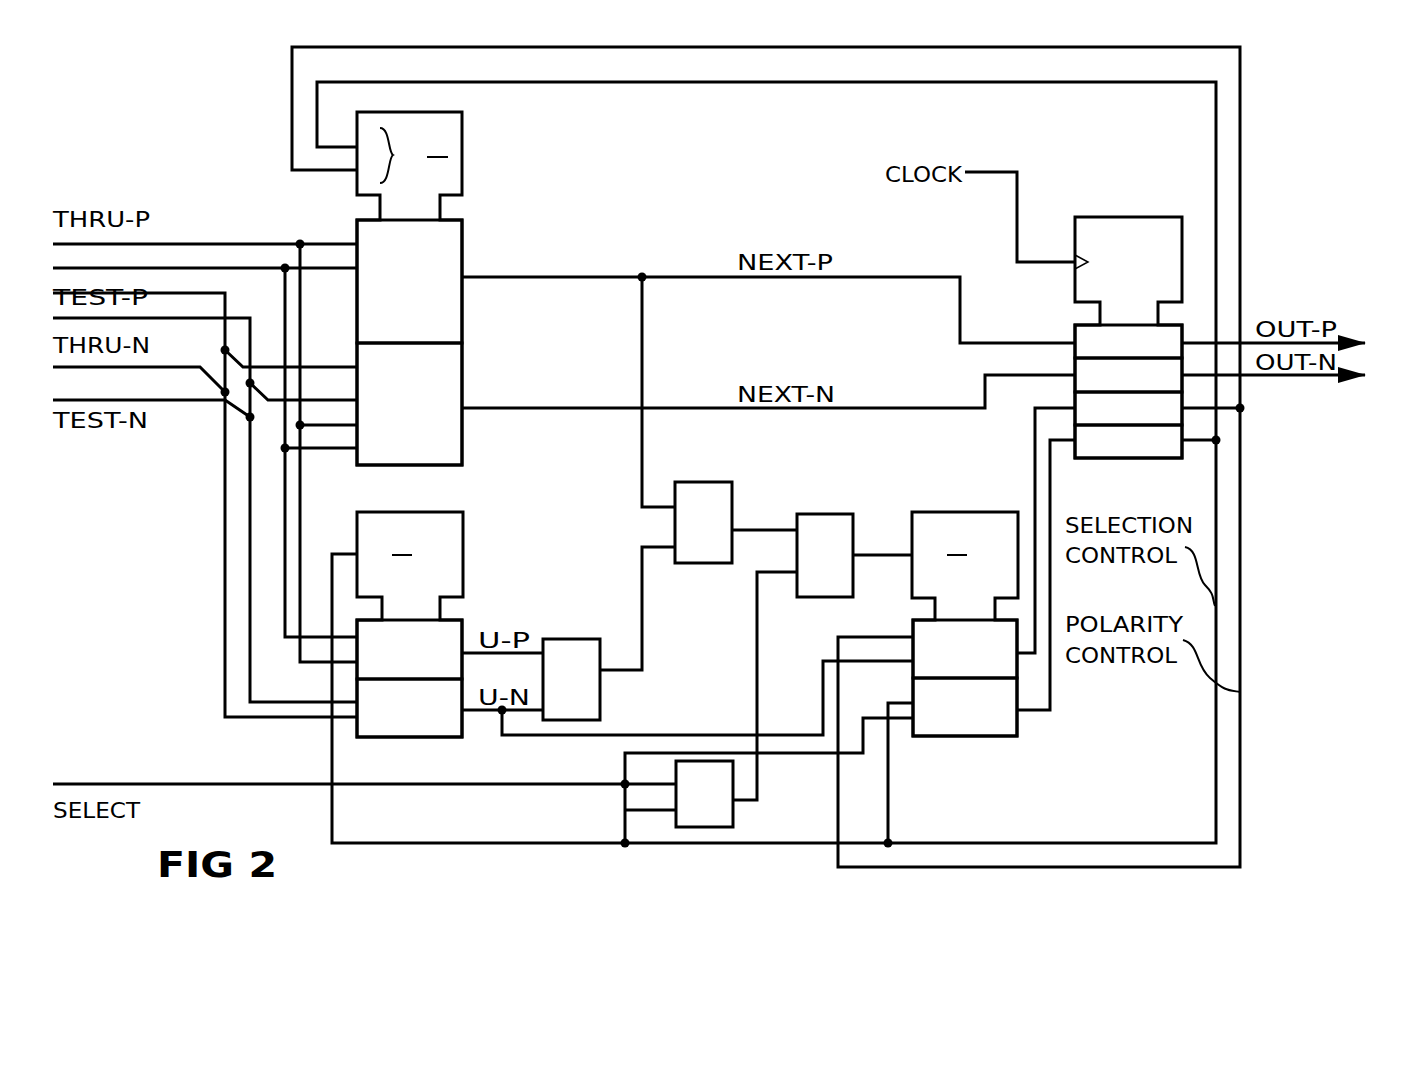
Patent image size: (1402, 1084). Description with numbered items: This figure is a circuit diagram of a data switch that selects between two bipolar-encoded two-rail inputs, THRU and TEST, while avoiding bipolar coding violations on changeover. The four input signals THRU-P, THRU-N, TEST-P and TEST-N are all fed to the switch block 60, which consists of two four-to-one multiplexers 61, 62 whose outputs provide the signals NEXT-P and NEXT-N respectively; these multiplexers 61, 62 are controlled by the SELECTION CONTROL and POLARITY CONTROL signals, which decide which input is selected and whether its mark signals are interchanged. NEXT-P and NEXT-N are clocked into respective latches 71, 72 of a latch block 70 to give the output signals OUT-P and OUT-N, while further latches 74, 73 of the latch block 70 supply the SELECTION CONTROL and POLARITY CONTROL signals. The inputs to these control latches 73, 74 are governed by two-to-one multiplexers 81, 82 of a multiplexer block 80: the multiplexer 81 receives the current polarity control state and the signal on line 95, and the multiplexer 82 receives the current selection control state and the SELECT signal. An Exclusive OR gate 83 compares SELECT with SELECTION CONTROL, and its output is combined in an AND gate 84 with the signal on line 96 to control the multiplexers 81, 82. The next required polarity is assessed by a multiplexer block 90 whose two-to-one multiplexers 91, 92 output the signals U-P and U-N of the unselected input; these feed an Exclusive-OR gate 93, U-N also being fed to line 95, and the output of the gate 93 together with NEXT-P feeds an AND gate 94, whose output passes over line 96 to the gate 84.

The switch block 60 is at (525, 216).
The four-to-one multiplexer 61 is at (445, 307).
The four-to-one multiplexer 62 is at (445, 404).
The latch block 70 is at (1114, 206).
The latch 71 is at (1182, 338).
The latch 72 is at (1182, 370).
The polarity control latch 73 is at (1172, 417).
The selection control latch 74 is at (1148, 448).
The multiplexer block 80 is at (968, 492).
The two-to-one multiplexer 81 is at (1008, 663).
The two-to-one multiplexer 82 is at (1010, 720).
The Exclusive OR gate 83 is at (720, 810).
The AND gate 84 is at (810, 520).
The multiplexer block 90 is at (447, 503).
The two-to-one multiplexer 91 is at (452, 632).
The two-to-one multiplexer 92 is at (388, 726).
The Exclusive-OR gate 93 is at (583, 645).
The AND gate 94 is at (708, 548).
The line 95 is at (720, 735).
The line 96 is at (742, 530).